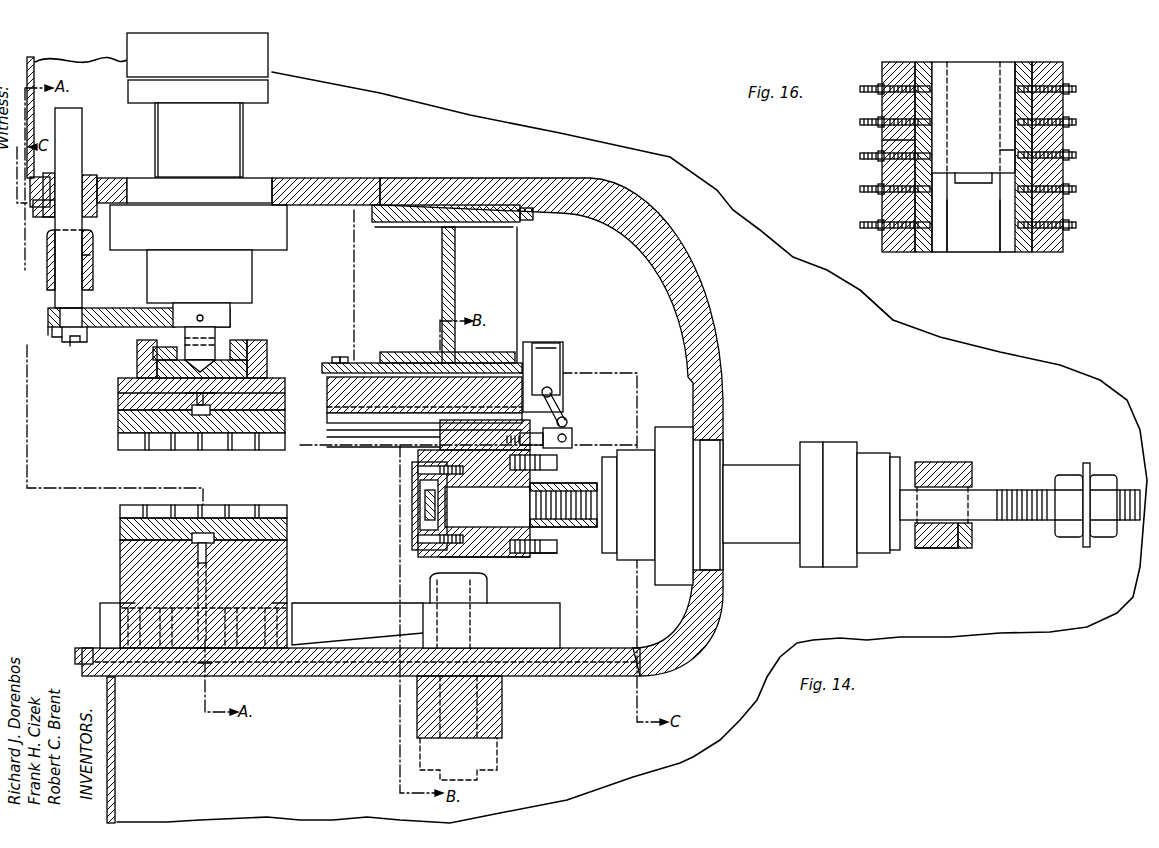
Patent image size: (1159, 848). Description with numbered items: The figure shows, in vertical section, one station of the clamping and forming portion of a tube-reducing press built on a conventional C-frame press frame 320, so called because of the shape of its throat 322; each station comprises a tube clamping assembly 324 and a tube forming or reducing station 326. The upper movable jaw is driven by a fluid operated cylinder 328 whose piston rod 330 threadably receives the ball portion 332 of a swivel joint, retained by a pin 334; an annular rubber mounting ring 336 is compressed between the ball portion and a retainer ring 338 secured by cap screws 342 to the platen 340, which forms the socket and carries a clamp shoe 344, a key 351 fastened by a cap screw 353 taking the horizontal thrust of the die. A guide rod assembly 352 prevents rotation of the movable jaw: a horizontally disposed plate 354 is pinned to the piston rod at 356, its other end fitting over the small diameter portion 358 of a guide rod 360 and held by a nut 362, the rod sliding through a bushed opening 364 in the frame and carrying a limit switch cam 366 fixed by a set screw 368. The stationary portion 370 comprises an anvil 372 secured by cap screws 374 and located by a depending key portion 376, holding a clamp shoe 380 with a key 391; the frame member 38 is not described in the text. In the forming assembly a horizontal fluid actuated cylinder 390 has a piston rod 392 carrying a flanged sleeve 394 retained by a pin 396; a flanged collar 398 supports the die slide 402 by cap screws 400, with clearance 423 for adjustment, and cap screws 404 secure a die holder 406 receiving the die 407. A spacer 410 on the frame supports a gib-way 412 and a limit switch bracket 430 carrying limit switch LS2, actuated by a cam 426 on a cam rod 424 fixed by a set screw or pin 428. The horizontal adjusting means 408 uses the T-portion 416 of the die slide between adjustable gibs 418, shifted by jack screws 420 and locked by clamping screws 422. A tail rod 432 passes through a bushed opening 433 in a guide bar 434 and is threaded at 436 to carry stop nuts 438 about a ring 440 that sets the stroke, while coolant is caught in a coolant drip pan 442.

In FIG. 14, the fluid operated cylinder 328 is at (243, 136).
In FIG. 14, the bushed opening 364 is at (80, 176).
In FIG. 14, the guide rod 360 is at (78, 237).
In FIG. 14, the set screw 368 is at (90, 256).
In FIG. 14, the limit switch cam 366 is at (94, 266).
In FIG. 14, the pin 356 is at (197, 316).
In FIG. 14, the piston rod 330 is at (210, 320).
In FIG. 14, the horizontally disposed plate 354 is at (112, 310).
In FIG. 14, the pin 334 is at (222, 338).
In FIG. 14, the annular rubber mounting ring 336 is at (263, 342).
In FIG. 14, the ball portion 332 is at (258, 358).
In FIG. 14, the retainer ring 338 is at (270, 368).
In FIG. 14, the cap screws 342 is at (146, 340).
In FIG. 14, the guide rod assembly 352 is at (48, 332).
In FIG. 14, the small diameter portion 358 is at (78, 320).
In FIG. 14, the nut 362 is at (75, 342).
In FIG. 14, the platen 340 is at (120, 405).
In FIG. 14, the clamp shoe 344 is at (120, 424).
In FIG. 14, the key 351 is at (190, 398).
In FIG. 14, the cap screw 353 is at (205, 416).
In FIG. 14, the tube clamping assembly 324 is at (256, 450).
In FIG. 14, the key 391 is at (205, 535).
In FIG. 14, the clamp shoe 380 is at (288, 526).
In FIG. 14, the stationary portion of the clamping assembly 370 is at (128, 558).
In FIG. 14, the anvil 372 is at (122, 557).
In FIG. 14, the frame member 38 is at (78, 648).
In FIG. 14, the cap screws 374 is at (157, 675).
In FIG. 14, the depending key portion 376 is at (210, 655).
In FIG. 14, the spacer 410 is at (456, 258).
In FIG. 14, the gib-way 412 is at (366, 385).
In FIG. 16, the gib-way 412 is at (880, 171).
In FIG. 14, the limit switch bracket 430 is at (555, 345).
In FIG. 14, the limit switch LS2 is at (560, 360).
In FIG. 14, the cam rod 424 is at (552, 398).
In FIG. 14, the cam 426 is at (568, 415).
In FIG. 14, the set screw or pin 428 is at (572, 435).
In FIG. 14, the cap screws 400 is at (574, 440).
In FIG. 14, the flanged collar 398 is at (550, 476).
In FIG. 14, the pin 396 is at (585, 492).
In FIG. 14, the piston rod 392 is at (595, 516).
In FIG. 14, the flanged sleeve 394 is at (560, 543).
In FIG. 14, the cap screws 404 is at (415, 472).
In FIG. 14, the die 407 is at (455, 497).
In FIG. 14, the die holder 406 is at (415, 526).
In FIG. 14, the die slide 402 is at (488, 553).
In FIG. 14, the clearance 423 is at (550, 562).
In FIG. 14, the tube forming or reducing station 326 is at (540, 558).
In FIG. 14, the coolant drip pan 442 is at (545, 637).
In FIG. 14, the throat 322 is at (650, 268).
In FIG. 14, the press frame 320 is at (866, 362).
In FIG. 14, the fluid actuated cylinder 390 is at (765, 465).
In FIG. 14, the tail rod 432 is at (920, 480).
In FIG. 14, the threaded portion 436 is at (1027, 490).
In FIG. 14, the stop nuts 438 is at (1097, 475).
In FIG. 14, the guide bar 434 is at (935, 550).
In FIG. 14, the bushed opening 433 is at (957, 537).
In FIG. 14, the ring 440 is at (1086, 547).
In FIG. 16, the horizontal adjusting means 408 is at (883, 76).
In FIG. 16, the jack screws 420 is at (862, 92).
In FIG. 16, the clamping screws 422 is at (862, 122).
In FIG. 16, the T-portion 416 is at (1015, 165).
In FIG. 16, the adjustable gibs 418 is at (1000, 230).